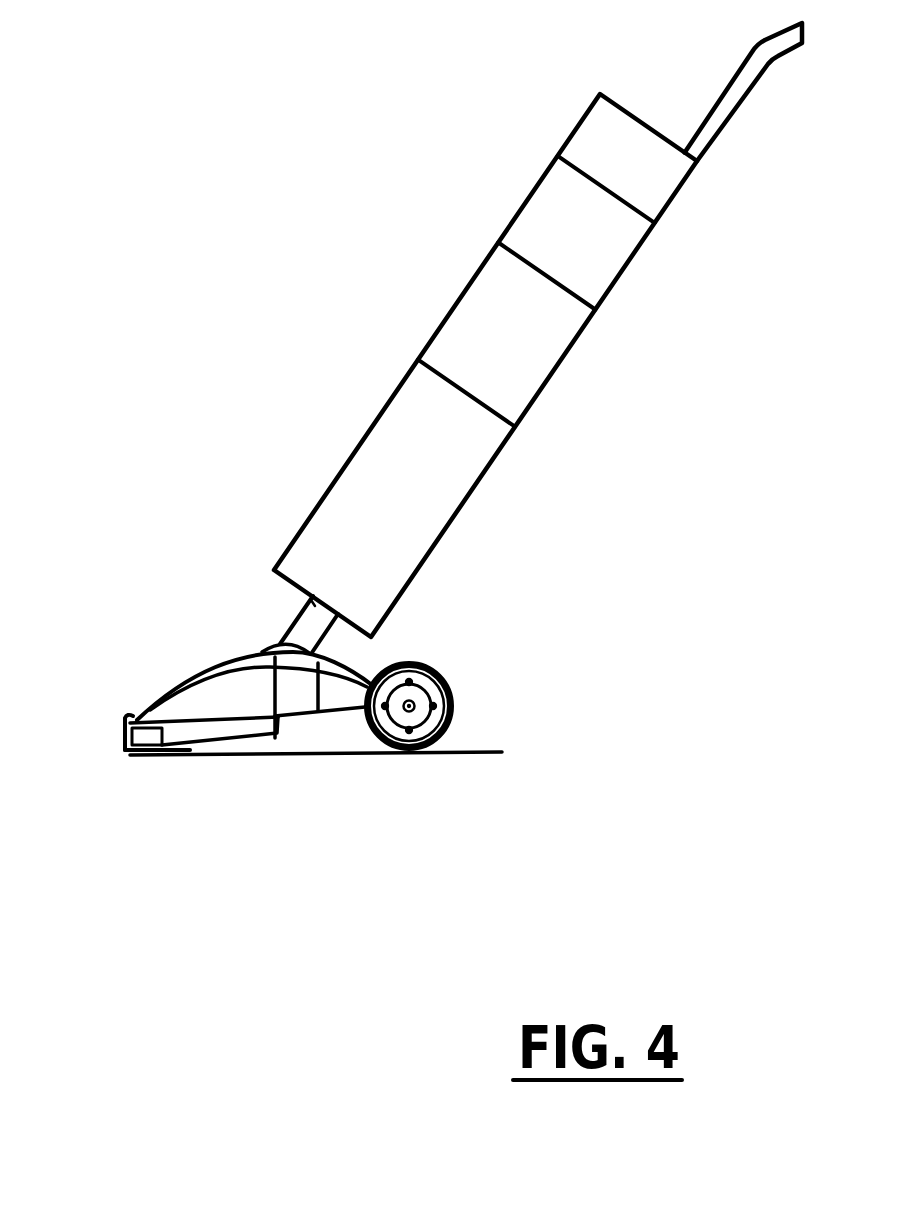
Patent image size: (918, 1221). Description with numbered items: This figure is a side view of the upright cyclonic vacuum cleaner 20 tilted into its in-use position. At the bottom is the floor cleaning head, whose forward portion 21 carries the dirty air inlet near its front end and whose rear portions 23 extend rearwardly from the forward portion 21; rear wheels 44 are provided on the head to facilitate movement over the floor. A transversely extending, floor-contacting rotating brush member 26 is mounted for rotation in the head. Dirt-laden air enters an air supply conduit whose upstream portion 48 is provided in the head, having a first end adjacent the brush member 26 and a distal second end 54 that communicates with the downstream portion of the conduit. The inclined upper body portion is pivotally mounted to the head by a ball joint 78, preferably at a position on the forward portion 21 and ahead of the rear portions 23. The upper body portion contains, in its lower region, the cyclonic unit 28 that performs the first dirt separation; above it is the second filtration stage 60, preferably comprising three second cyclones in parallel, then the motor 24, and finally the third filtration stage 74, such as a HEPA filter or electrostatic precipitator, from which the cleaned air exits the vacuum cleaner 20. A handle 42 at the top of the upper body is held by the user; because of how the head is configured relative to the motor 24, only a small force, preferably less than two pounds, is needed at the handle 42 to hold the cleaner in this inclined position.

The upright cyclonic vacuum cleaner 20 is at (252, 220).
The forward portion 21 is at (157, 708).
The rear portions 23 is at (340, 692).
The motor 24 is at (547, 213).
The rotating brush member 26 is at (187, 753).
The cyclonic unit 28 is at (350, 448).
The handle 42 is at (725, 117).
The rear wheels 44 is at (430, 665).
The upstream portion 48 is at (305, 630).
The second end 54 is at (297, 613).
The second filtration stage 60 is at (473, 318).
The third filtration stage 74 is at (607, 150).
The ball joint 78 is at (260, 655).